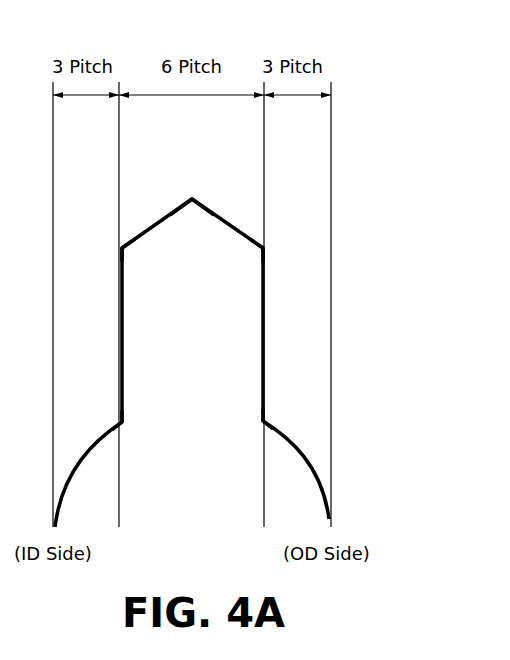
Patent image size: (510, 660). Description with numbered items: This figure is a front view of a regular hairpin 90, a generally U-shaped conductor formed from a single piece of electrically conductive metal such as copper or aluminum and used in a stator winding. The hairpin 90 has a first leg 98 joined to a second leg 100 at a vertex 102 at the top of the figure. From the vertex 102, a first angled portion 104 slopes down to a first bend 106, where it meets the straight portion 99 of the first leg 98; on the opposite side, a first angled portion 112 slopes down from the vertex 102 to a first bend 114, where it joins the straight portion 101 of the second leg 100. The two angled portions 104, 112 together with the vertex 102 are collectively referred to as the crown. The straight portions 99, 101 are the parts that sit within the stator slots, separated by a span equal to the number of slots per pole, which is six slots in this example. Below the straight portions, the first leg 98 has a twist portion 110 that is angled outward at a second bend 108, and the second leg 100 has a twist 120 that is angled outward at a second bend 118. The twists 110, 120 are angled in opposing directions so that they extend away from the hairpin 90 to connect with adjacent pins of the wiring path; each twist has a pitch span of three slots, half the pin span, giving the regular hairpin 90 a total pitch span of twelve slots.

The regular hairpin 90 is at (136, 44).
The first leg 98 is at (262, 388).
The straight portion 99 is at (265, 308).
The second leg 100 is at (122, 388).
The straight portion 101 is at (123, 366).
The vertex 102 is at (192, 197).
The first angled portion 104 is at (234, 221).
The first bend 106 is at (257, 252).
The second bend 108 is at (261, 422).
The twist portion 110 is at (303, 458).
The first angled portion 112 is at (153, 227).
The first bend 114 is at (124, 251).
The second bend 118 is at (124, 423).
The twist 120 is at (80, 458).